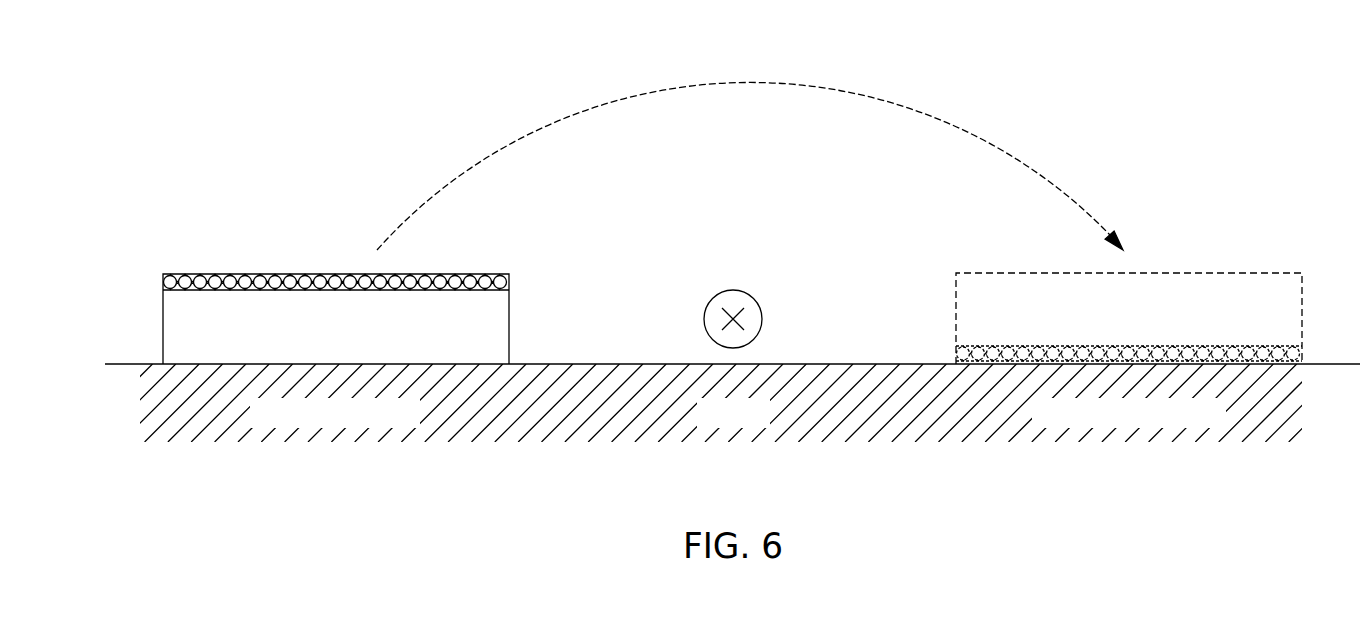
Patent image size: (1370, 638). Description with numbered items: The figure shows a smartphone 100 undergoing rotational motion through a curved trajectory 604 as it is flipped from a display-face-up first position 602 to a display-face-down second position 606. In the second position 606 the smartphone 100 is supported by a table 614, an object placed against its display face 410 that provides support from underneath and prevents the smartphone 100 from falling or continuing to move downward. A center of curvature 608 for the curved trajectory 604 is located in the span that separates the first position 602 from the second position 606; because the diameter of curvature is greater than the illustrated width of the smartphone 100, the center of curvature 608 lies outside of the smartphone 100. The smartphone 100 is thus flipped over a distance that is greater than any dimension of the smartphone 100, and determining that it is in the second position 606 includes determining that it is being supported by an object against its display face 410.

The smartphone 100 is at (177, 320).
The display face 410 is at (337, 273).
The first position 602 is at (310, 440).
The curved trajectory 604 is at (748, 83).
The second position 606 is at (1122, 442).
The center of curvature 608 is at (705, 320).
The table 614 is at (720, 443).